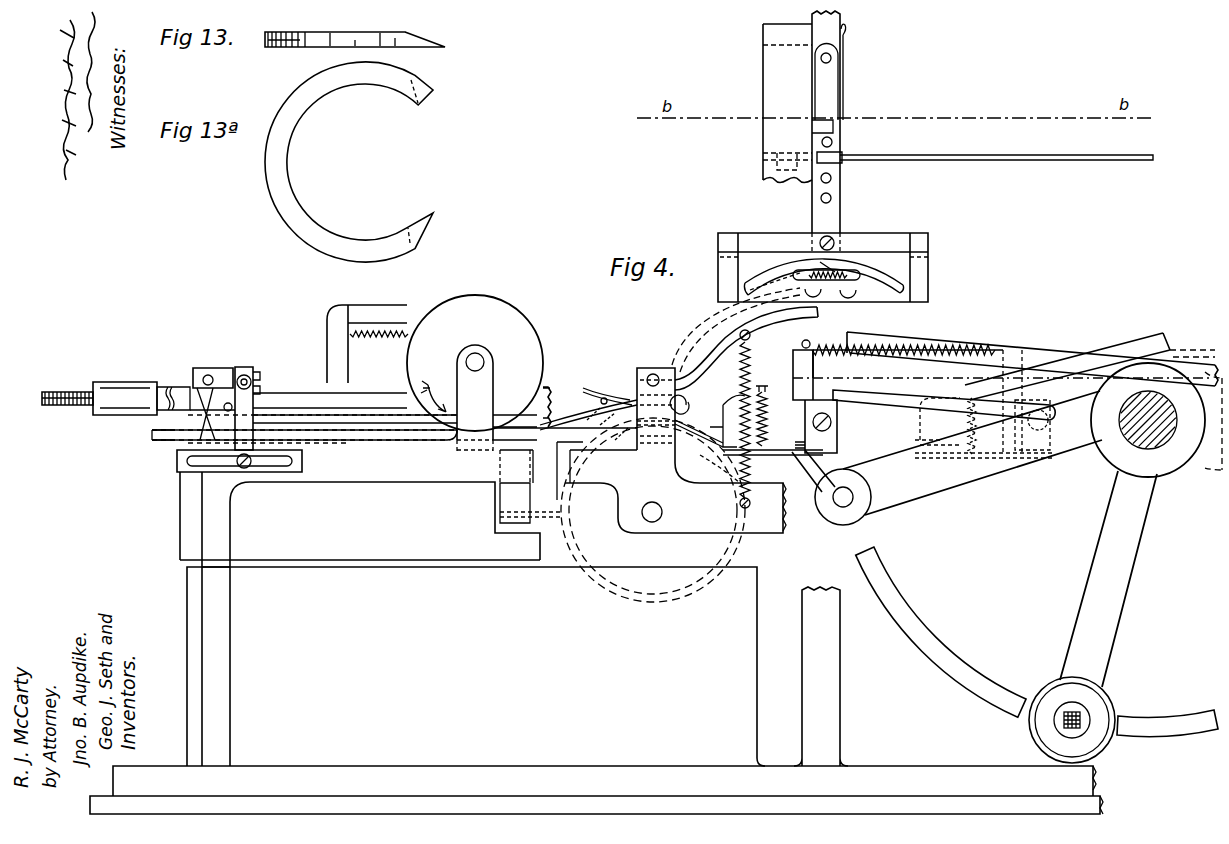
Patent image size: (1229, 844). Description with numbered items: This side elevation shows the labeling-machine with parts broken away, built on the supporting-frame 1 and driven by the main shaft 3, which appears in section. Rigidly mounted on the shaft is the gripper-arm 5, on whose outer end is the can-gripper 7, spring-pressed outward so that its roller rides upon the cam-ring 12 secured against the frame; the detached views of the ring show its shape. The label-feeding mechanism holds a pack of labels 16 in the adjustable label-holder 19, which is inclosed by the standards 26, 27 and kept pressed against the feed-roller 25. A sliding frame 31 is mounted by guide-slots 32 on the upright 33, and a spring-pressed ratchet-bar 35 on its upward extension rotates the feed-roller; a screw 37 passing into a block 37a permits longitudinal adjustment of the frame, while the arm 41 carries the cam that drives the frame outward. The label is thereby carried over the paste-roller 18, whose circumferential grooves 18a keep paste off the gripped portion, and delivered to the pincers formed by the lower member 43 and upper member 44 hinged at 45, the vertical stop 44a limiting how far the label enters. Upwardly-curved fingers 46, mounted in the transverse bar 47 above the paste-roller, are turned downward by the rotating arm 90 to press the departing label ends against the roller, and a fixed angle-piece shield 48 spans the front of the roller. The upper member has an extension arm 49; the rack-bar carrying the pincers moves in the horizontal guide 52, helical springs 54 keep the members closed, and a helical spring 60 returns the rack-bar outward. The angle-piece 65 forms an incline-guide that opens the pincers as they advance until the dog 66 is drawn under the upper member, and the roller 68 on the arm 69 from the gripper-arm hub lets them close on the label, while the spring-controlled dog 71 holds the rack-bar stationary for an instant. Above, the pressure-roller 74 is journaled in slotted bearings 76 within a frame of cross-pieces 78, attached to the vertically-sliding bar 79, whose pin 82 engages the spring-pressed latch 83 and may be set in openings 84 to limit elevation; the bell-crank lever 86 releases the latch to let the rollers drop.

In FIG. 4, the supporting-frame 1 is at (660, 773).
In FIG. 4, the main shaft 3 is at (1156, 420).
In FIG. 4, the gripper-arm 5 is at (1107, 606).
In FIG. 4, the can-gripper 7 is at (1090, 712).
In FIG. 13, the cam-ring 12 is at (296, 48).
In FIG. 13A, the cam-ring 12 is at (288, 161).
In FIG. 4, the cam-ring 12 is at (912, 612).
In FIG. 4, the labels 16 is at (382, 430).
In FIG. 4, the paste-roller 18 is at (673, 510).
In FIG. 4, the circumferential grooves 18a is at (712, 462).
In FIG. 4, the label-holder 19 is at (387, 440).
In FIG. 4, the feed-roller 25 is at (475, 363).
In FIG. 4, the standard 26 is at (248, 420).
In FIG. 4, the standard 27 is at (457, 398).
In FIG. 4, the sliding frame 31 is at (440, 407).
In FIG. 4, the guide-slots 32 is at (283, 400).
In FIG. 4, the upright 33 is at (245, 370).
In FIG. 4, the spring-pressed ratchet-bar 35 is at (376, 330).
In FIG. 4, the screw 37 is at (74, 392).
In FIG. 4, the block 37a is at (108, 399).
In FIG. 4, the arm 41 is at (228, 411).
In FIG. 4, the lower pincer member 43 is at (778, 456).
In FIG. 4, the upper pincer member 44 is at (728, 400).
In FIG. 4, the vertical stop 44a is at (694, 405).
In FIG. 4, the hinge 45 is at (831, 420).
In FIG. 4, the upwardly-curved fingers 46 is at (700, 312).
In FIG. 4, the transverse bar 47 is at (649, 368).
In FIG. 4, the transverse shield 48 is at (557, 490).
In FIG. 4, the extension arm 49 is at (887, 392).
In FIG. 4, the horizontal guide 52 is at (1001, 364).
In FIG. 4, the helical springs 54 is at (862, 419).
In FIG. 4, the helical spring 60 is at (946, 343).
In FIG. 4, the angle-piece 65 is at (1125, 345).
In FIG. 4, the dog 66 is at (812, 465).
In FIG. 4, the roller 68 is at (818, 508).
In FIG. 4, the arm 69 is at (972, 453).
In FIG. 4, the spring-controlled dog 71 is at (836, 284).
In FIG. 4, the pressure-roller 74 is at (804, 288).
In FIG. 4, the slotted bearings 76 is at (880, 290).
In FIG. 4, the cross-pieces 78 is at (752, 233).
In FIG. 4, the vertically-sliding bar 79 is at (840, 216).
In FIG. 4, the pin 82 is at (822, 141).
In FIG. 4, the spring-pressed latch 83 is at (840, 128).
In FIG. 4, the openings 84 is at (832, 198).
In FIG. 4, the bell-crank lever 86 is at (935, 155).
In FIG. 4, the arm 90 is at (1032, 359).